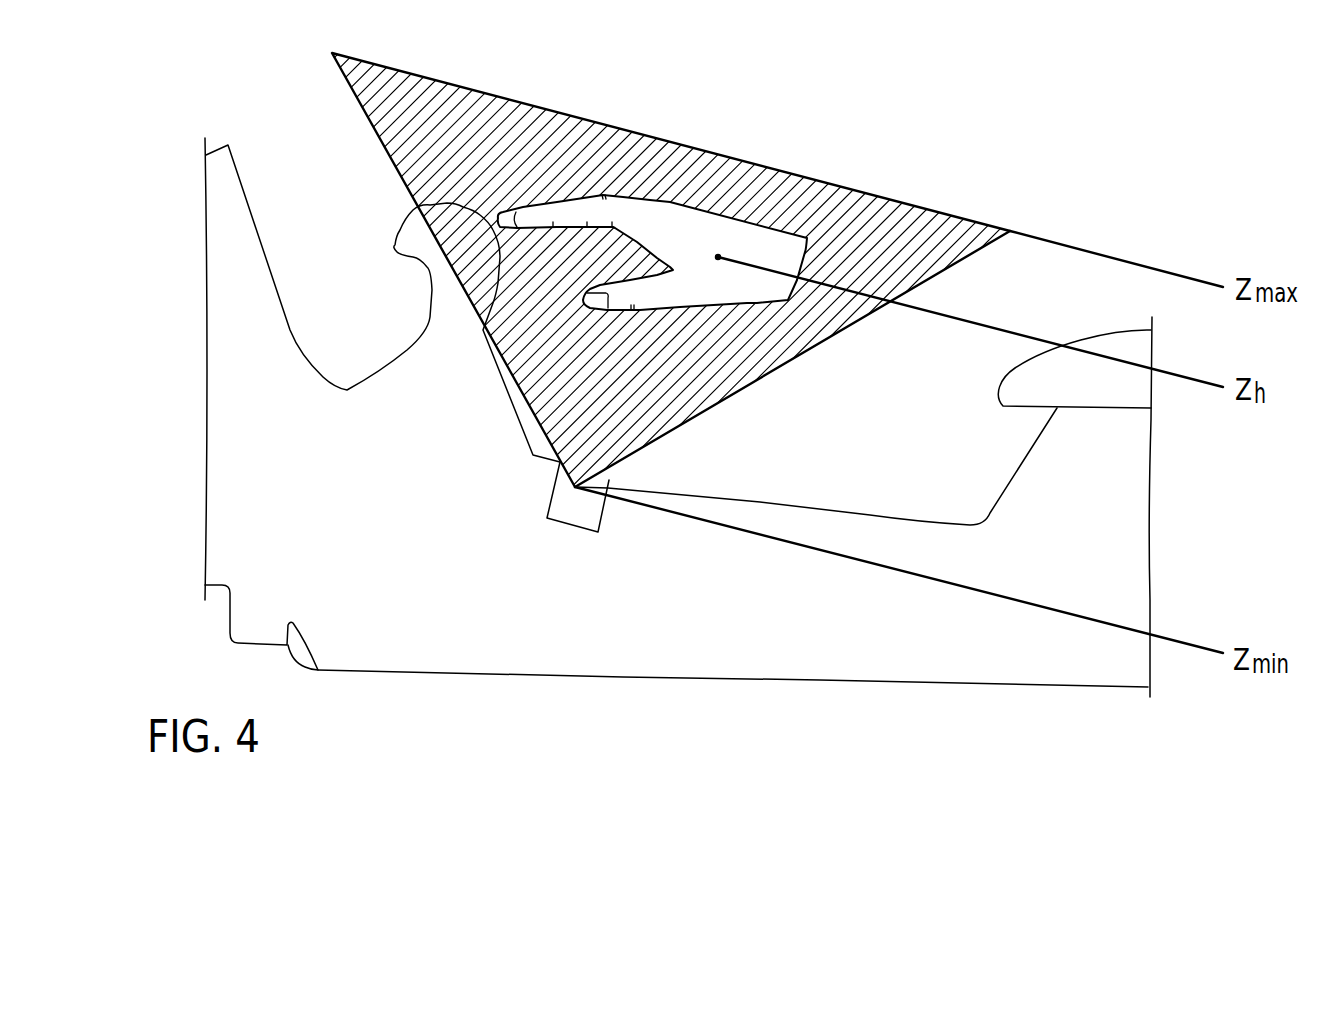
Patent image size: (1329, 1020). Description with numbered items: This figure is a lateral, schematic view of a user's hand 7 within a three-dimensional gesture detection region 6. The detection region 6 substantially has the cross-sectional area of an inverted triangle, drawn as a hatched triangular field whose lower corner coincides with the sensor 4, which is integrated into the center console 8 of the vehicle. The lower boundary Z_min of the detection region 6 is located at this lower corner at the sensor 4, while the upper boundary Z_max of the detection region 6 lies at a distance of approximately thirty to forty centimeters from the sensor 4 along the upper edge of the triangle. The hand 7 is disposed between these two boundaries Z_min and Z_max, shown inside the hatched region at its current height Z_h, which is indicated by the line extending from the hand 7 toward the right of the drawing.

The sensor 4 is at (608, 488).
The detection region 6 is at (522, 103).
The hand 7 is at (662, 218).
The center console 8 is at (870, 513).